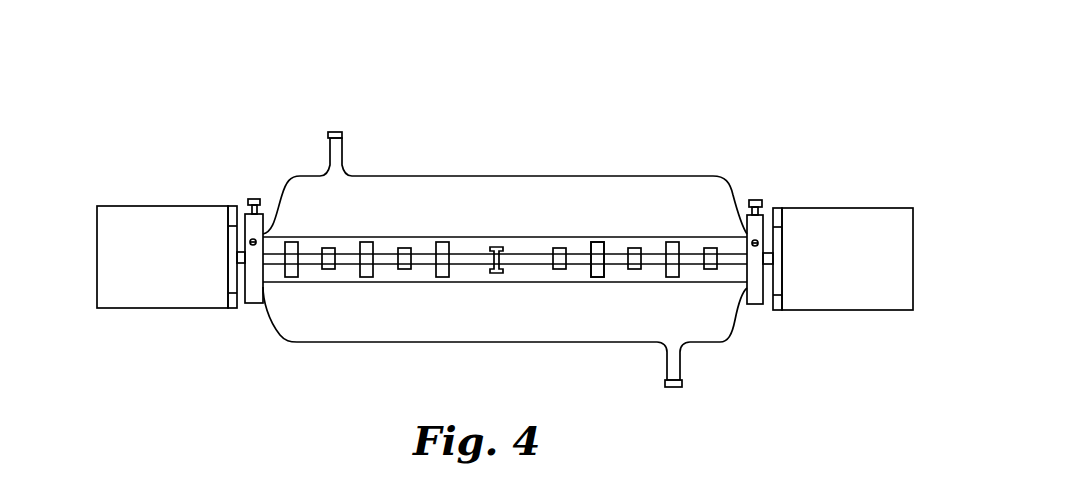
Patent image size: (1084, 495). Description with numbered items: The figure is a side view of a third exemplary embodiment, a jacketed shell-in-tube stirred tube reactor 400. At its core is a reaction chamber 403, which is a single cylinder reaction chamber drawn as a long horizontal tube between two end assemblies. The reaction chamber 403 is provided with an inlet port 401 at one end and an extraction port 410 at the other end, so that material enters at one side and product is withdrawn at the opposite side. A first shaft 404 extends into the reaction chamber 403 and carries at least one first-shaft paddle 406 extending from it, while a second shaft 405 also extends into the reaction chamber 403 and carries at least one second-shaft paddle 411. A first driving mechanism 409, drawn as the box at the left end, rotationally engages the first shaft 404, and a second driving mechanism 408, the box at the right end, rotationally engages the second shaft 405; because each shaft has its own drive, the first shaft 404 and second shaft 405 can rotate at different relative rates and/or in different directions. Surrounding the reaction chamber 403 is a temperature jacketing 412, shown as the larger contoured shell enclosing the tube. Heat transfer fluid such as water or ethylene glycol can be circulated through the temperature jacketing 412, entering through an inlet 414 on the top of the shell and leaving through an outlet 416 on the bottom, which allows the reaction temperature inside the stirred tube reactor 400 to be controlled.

The stirred tube reactor 400 is at (755, 80).
The inlet port 401 is at (248, 199).
The reaction chamber 403 is at (330, 282).
The first shaft 404 is at (470, 253).
The second shaft 405 is at (523, 253).
The first-shaft paddle 406 is at (443, 282).
The second driving mechanism 408 is at (828, 208).
The first driving mechanism 409 is at (178, 206).
The extraction port 410 is at (755, 200).
The second-shaft paddle 411 is at (597, 282).
The temperature jacketing 412 is at (670, 176).
The inlet 414 is at (337, 132).
The outlet 416 is at (675, 387).